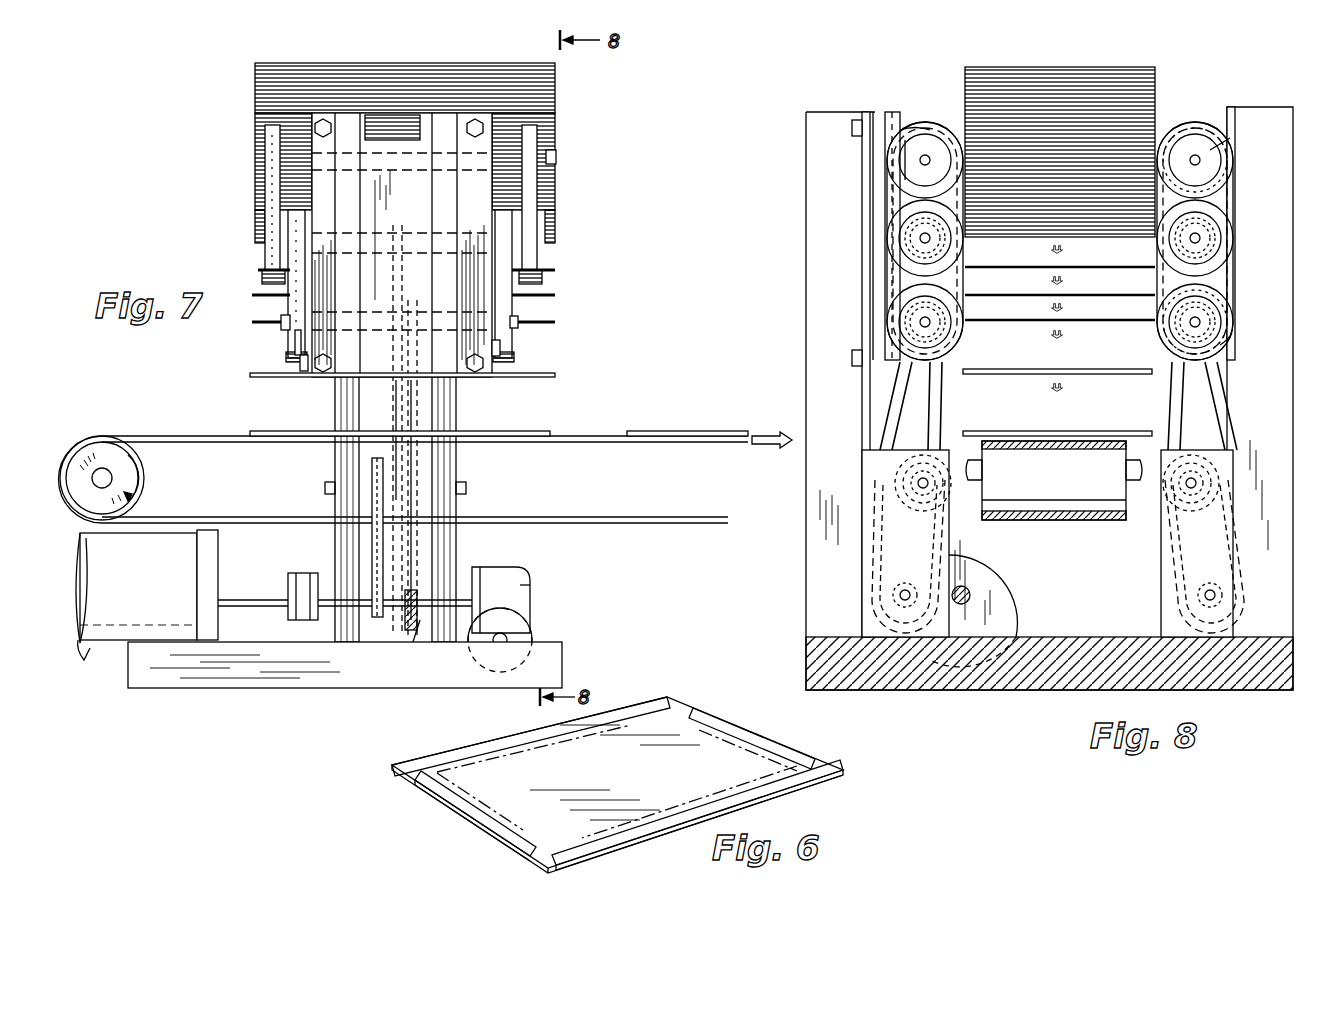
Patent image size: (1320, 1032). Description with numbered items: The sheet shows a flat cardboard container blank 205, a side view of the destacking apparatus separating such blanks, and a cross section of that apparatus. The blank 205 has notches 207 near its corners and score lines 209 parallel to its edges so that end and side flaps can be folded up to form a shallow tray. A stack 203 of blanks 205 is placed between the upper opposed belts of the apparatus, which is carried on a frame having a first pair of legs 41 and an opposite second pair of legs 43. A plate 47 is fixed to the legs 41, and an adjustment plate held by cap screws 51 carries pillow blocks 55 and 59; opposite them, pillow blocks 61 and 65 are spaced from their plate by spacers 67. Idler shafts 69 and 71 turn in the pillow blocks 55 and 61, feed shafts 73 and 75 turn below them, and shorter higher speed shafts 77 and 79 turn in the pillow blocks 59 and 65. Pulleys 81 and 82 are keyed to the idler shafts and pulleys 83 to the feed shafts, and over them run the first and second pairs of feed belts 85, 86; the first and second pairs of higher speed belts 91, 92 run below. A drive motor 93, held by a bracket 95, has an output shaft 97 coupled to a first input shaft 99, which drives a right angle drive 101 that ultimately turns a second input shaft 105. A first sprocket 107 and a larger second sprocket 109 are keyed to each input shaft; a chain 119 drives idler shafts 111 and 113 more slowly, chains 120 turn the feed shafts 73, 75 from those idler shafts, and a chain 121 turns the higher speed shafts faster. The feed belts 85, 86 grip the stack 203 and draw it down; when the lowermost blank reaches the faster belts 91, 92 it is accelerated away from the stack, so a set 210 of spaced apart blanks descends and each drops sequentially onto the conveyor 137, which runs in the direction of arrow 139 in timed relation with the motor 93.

In FIG. 7, the first pair of legs 41 is at (442, 545).
In FIG. 8, the second pair of legs 43 is at (1272, 385).
In FIG. 8, the plate 47 is at (862, 230).
In FIG. 8, the cap screws 51 is at (850, 128).
In FIG. 8, the pillow blocks 55 is at (898, 128).
In FIG. 8, the pillow blocks 59 is at (920, 312).
In FIG. 8, the pillow blocks 61 is at (1230, 130).
In FIG. 8, the pillow blocks 65 is at (1230, 340).
In FIG. 8, the spacers 67 is at (1225, 182).
In FIG. 7, the idler shaft 69 is at (556, 160).
In FIG. 8, the idler shaft 71 is at (1202, 160).
In FIG. 7, the feed shaft 73 is at (512, 243).
In FIG. 8, the feed shaft 75 is at (1202, 238).
In FIG. 7, the higher speed shaft 77 is at (292, 340).
In FIG. 8, the higher speed shaft 79 is at (1202, 322).
In FIG. 7, the pulleys 81 is at (530, 138).
In FIG. 8, the pulleys 81 is at (925, 140).
In FIG. 8, the pulleys 82 is at (1200, 135).
In FIG. 7, the pulleys 83 is at (292, 258).
In FIG. 8, the pulleys 83 is at (1205, 212).
In FIG. 7, the first pair of feed belts 85 is at (272, 145).
In FIG. 8, the first pair of feed belts 85 is at (950, 125).
In FIG. 8, the second pair of feed belts 86 is at (1165, 130).
In FIG. 7, the first pair of higher speed belts 91 is at (302, 368).
In FIG. 8, the first pair of higher speed belts 91 is at (955, 360).
In FIG. 8, the second pair of higher speed belts 92 is at (1185, 362).
In FIG. 7, the drive motor 93 is at (97, 593).
In FIG. 7, the bracket 95 is at (208, 572).
In FIG. 8, the bracket 95 is at (1000, 615).
In FIG. 8, the motor output shaft 97 is at (970, 594).
In FIG. 7, the first input shaft 99 is at (415, 630).
In FIG. 8, the first input shaft 99 is at (900, 595).
In FIG. 7, the right angle drive 101 is at (495, 590).
In FIG. 8, the second input shaft 105 is at (1215, 596).
In FIG. 7, the first sprocket 107 is at (375, 541).
In FIG. 7, the second sprocket 109 is at (405, 632).
In FIG. 8, the idler shaft 111 is at (918, 483).
In FIG. 8, the idler shaft 113 is at (1196, 483).
In FIG. 8, the chain 119 is at (1170, 545).
In FIG. 8, the chains 120 is at (1215, 415).
In FIG. 8, the chain 121 is at (900, 385).
In FIG. 7, the conveyor 137 is at (600, 520).
In FIG. 8, the conveyor 137 is at (1090, 520).
In FIG. 7, the arrow 139 is at (135, 478).
In FIG. 8, the arrow 139 is at (1054, 480).
In FIG. 7, the stack 203 is at (555, 92).
In FIG. 8, the stack 203 is at (1155, 70).
In FIG. 7, the blank 205 is at (620, 400).
In FIG. 8, the blank 205 is at (1120, 432).
In FIG. 6, the blank 205 is at (617, 785).
In FIG. 6, the notches 207 is at (388, 775).
In FIG. 6, the score lines 209 is at (540, 748).
In FIG. 7, the set of spaced apart articles 210 is at (563, 262).
In FIG. 8, the set of spaced apart articles 210 is at (1027, 268).